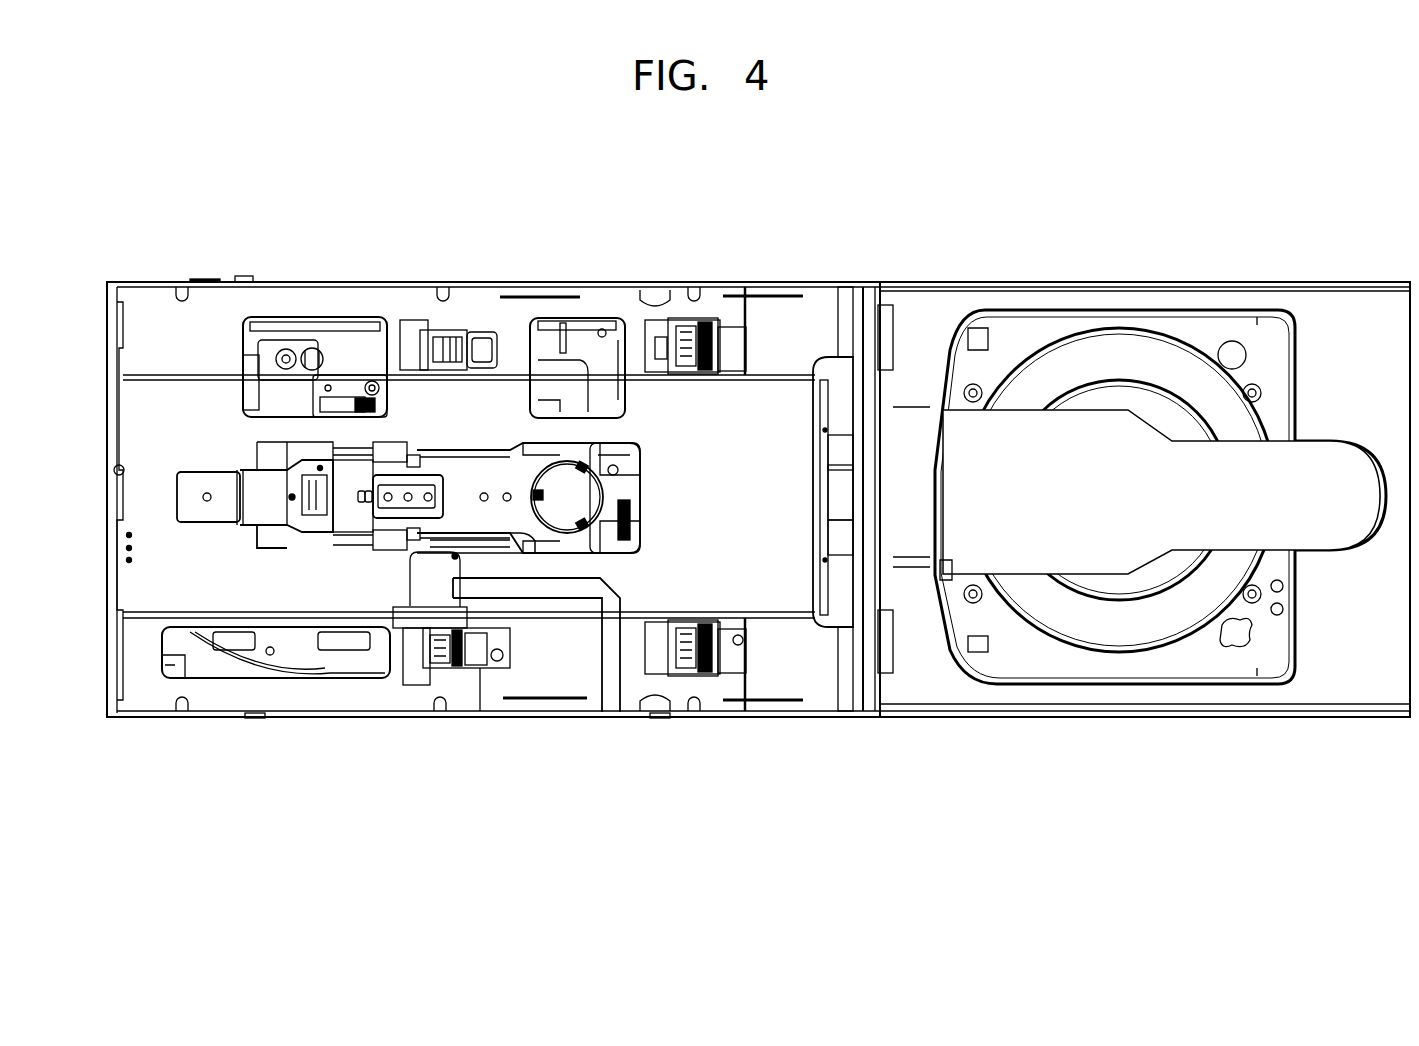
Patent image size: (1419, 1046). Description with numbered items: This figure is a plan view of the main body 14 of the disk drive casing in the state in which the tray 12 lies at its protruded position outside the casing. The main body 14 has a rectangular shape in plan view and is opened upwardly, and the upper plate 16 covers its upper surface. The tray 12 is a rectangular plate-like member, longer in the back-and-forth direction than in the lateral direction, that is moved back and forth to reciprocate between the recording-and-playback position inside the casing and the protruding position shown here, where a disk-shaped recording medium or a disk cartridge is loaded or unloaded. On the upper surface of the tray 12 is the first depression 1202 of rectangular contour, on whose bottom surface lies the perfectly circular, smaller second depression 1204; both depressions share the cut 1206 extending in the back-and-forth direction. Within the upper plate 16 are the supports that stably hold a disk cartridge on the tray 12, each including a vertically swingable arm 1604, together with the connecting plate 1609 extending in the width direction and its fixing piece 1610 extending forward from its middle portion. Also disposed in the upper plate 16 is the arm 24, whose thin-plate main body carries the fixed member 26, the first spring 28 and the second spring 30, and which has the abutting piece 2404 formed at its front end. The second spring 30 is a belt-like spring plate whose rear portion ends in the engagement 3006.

The tray 12 is at (1104, 278).
The main body 14 is at (545, 278).
The upper plate 16 is at (185, 405).
The arm 24 is at (473, 485).
The fixed member 26 is at (553, 488).
The first spring 28 is at (468, 500).
The second spring 30 is at (270, 505).
The first depression 1202 is at (1200, 330).
The second depression 1204 is at (1040, 362).
The cut 1206 is at (1100, 555).
The arm 1604 is at (528, 548).
The connecting plate 1609 is at (345, 500).
The fixing piece 1610 is at (415, 500).
The abutting piece 2404 is at (640, 510).
The engagement 3006 is at (230, 497).